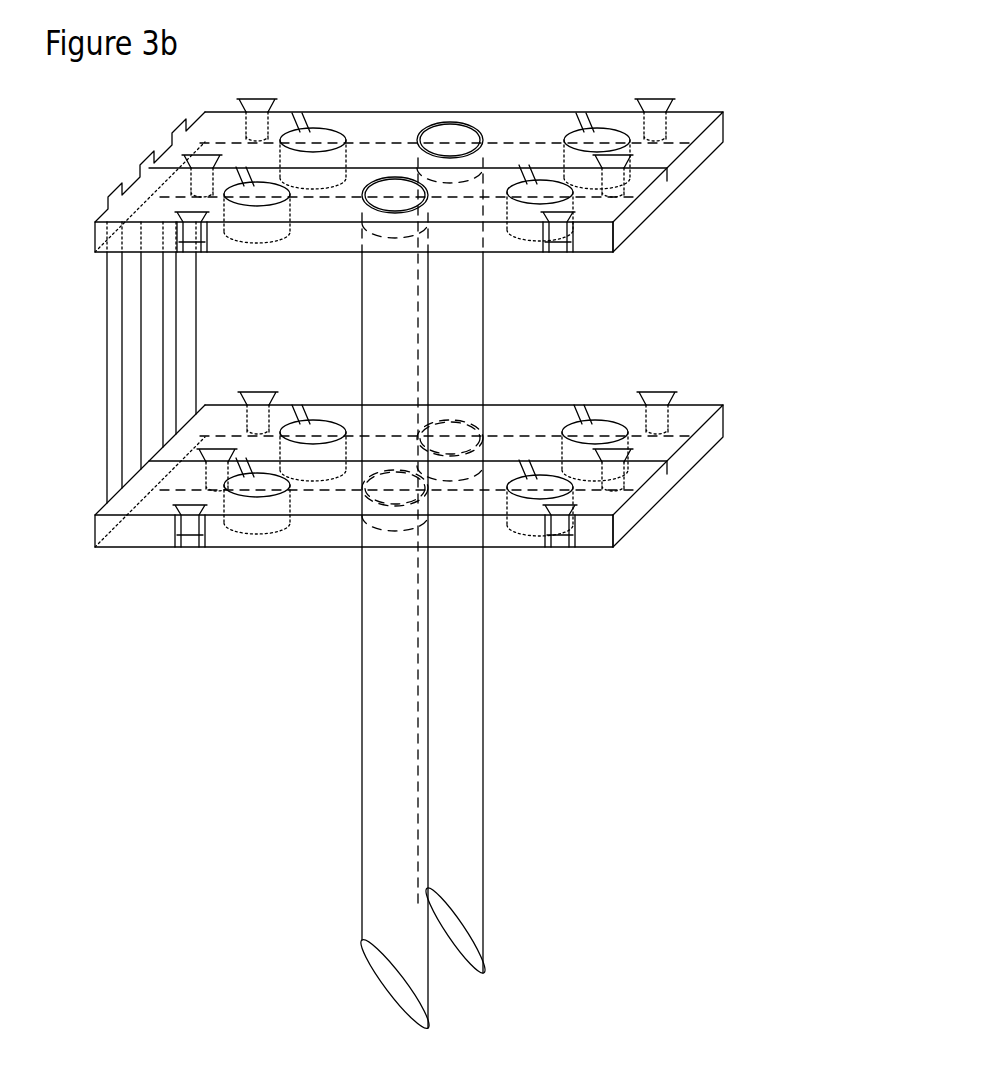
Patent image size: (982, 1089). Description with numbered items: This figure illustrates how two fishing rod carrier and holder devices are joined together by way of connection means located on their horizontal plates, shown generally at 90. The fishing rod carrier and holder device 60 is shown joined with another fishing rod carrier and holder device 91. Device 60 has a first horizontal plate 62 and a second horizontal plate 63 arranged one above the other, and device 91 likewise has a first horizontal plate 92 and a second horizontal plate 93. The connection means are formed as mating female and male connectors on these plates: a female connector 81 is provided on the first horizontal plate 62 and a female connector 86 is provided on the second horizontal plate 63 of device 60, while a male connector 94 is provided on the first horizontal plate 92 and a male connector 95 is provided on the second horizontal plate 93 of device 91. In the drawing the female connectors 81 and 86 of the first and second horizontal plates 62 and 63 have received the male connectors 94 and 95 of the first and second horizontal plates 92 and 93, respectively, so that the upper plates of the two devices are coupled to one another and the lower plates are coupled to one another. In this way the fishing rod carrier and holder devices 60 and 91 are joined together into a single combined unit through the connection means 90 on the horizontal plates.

The connection means 90 is at (447, 520).
The first horizontal plate 62 is at (441, 229).
The second horizontal plate 63 is at (447, 551).
The female connector 81 is at (641, 151).
The male connector 94 is at (625, 172).
The first horizontal plate 92 is at (615, 245).
The female connector 86 is at (633, 452).
The male connector 95 is at (703, 470).
The second horizontal plate 93 is at (607, 535).
The fishing rod carrier and holder device 91 is at (383, 707).
The fishing rod carrier and holder device 60 is at (465, 750).